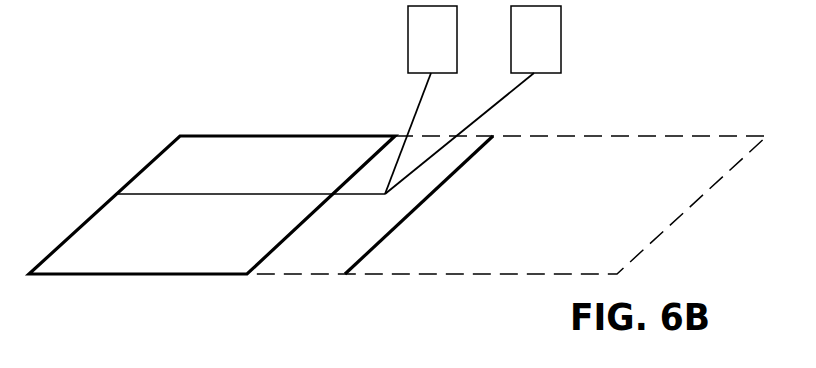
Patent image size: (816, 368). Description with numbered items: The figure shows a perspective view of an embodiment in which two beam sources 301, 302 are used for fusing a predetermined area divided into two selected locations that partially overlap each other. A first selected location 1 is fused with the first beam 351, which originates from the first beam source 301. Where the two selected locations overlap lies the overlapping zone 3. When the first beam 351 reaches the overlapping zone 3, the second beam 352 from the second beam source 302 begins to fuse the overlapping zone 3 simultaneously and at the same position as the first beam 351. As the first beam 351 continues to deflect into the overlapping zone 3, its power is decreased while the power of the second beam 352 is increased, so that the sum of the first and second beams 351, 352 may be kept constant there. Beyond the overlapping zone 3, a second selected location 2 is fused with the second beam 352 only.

The first selected location 1 is at (212, 205).
The second selected location 2 is at (507, 205).
The overlapping zone 3 is at (408, 205).
The beam source 301 is at (416, 50).
The beam source 302 is at (520, 50).
The first beam 351 is at (413, 115).
The second beam 352 is at (503, 102).